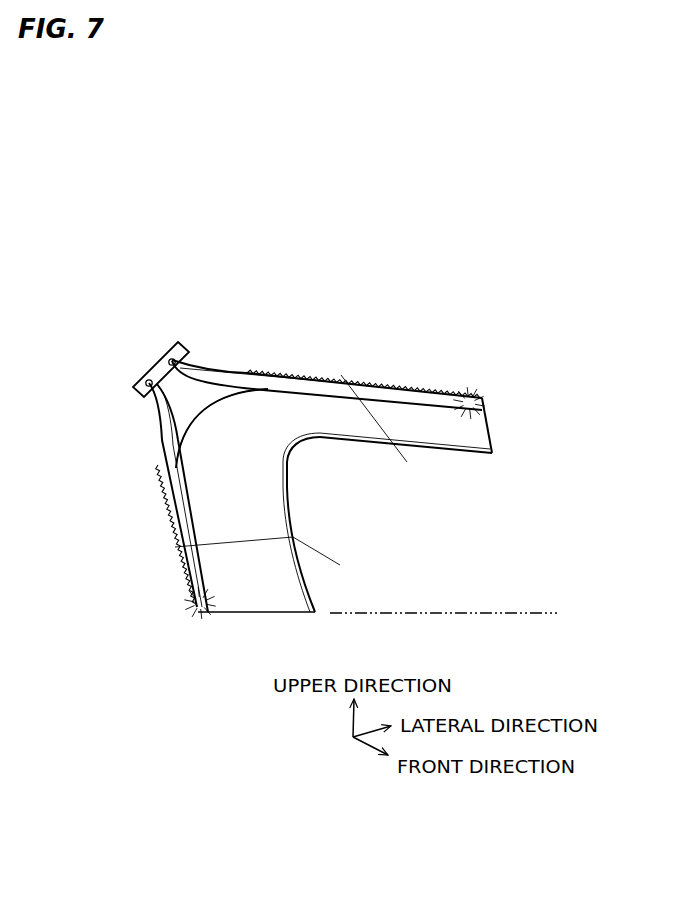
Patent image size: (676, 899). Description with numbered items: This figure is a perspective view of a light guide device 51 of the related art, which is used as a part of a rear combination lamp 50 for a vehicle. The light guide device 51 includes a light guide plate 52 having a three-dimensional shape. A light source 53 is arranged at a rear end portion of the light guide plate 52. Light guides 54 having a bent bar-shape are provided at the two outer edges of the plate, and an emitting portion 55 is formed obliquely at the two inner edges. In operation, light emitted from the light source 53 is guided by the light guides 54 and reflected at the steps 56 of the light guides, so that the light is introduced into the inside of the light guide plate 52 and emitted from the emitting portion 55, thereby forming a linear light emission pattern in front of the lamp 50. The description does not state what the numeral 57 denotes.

The rear combination lamp 50 is at (547, 389).
The light guide device 51 is at (138, 358).
The light guide plate 52 is at (233, 407).
The light source 53 is at (170, 357).
The light guides 54 is at (379, 394).
The emitting portion 55 is at (292, 513).
The steps 56 is at (413, 470).
The weld portion 57 is at (487, 406).